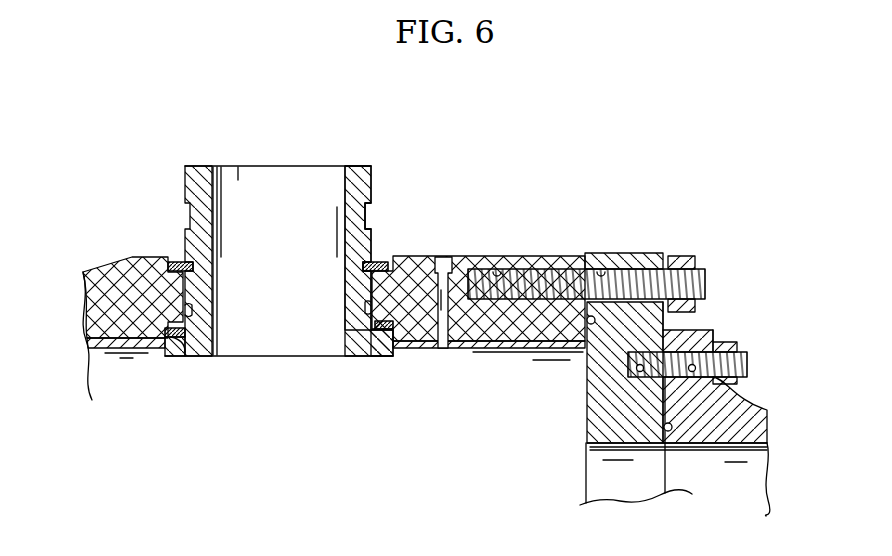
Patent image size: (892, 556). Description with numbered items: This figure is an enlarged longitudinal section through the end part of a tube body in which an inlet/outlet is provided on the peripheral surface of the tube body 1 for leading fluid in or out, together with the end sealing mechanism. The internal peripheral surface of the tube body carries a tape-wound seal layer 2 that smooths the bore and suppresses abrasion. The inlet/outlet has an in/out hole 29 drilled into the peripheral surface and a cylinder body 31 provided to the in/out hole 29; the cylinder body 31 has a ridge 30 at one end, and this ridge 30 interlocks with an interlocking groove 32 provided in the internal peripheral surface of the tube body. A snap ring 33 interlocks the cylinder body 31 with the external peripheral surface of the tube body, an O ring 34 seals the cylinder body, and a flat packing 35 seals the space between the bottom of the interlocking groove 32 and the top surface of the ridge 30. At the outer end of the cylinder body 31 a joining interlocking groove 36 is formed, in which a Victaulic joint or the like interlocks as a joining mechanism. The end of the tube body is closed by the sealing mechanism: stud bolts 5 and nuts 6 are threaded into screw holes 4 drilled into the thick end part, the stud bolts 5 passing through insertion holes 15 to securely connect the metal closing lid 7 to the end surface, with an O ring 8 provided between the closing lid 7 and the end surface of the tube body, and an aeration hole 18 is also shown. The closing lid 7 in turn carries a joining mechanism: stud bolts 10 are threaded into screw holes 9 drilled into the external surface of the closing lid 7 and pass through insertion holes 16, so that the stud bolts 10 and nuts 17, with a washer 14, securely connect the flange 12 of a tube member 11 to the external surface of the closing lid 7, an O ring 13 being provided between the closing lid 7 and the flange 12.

The first member 1 is at (117, 260).
The seal layer 2 is at (122, 345).
The screw holes 4 is at (503, 277).
The stud bolts 5 is at (527, 277).
The nuts 6 is at (688, 257).
The closing lid 7 is at (630, 255).
The O ring 8 is at (557, 347).
The screw holes 9 is at (647, 378).
The stud bolts 10 is at (745, 356).
The tube member 11 is at (763, 410).
The flange 12 is at (711, 318).
The O ring 13 is at (668, 382).
The washer 14 is at (667, 255).
The insertion holes 15 is at (612, 255).
The insertion holes 16 is at (686, 382).
The nuts 17 is at (719, 344).
The aeration hole 18 is at (444, 257).
The in/out hole 29 is at (366, 300).
The ridge 30 is at (376, 362).
The cylinder body 31 is at (353, 167).
The interlocking groove 32 is at (180, 338).
The snap ring 33 is at (181, 262).
The O ring 34 is at (374, 323).
The flat packing 35 is at (384, 318).
The joining interlocking groove 36 is at (372, 207).